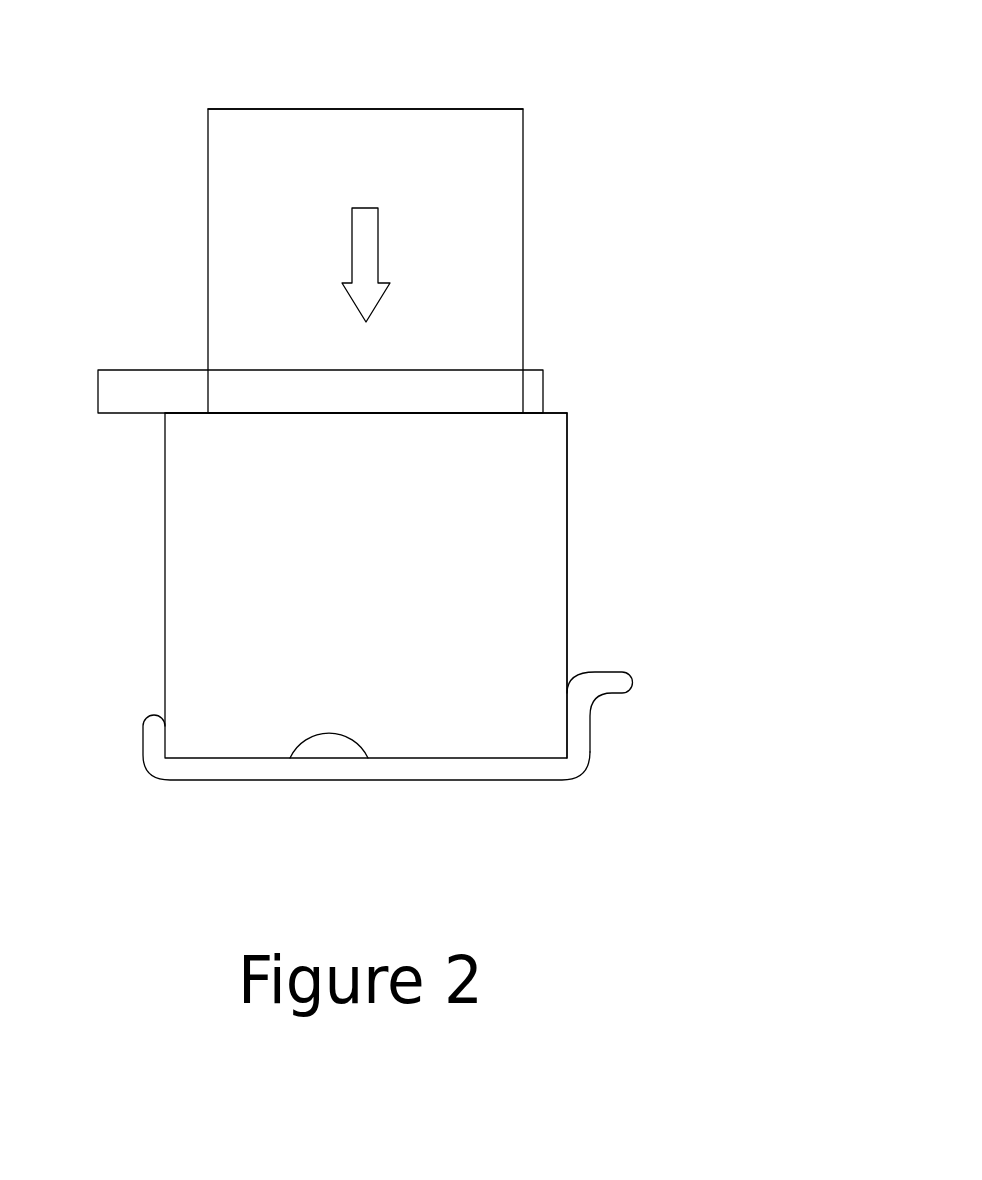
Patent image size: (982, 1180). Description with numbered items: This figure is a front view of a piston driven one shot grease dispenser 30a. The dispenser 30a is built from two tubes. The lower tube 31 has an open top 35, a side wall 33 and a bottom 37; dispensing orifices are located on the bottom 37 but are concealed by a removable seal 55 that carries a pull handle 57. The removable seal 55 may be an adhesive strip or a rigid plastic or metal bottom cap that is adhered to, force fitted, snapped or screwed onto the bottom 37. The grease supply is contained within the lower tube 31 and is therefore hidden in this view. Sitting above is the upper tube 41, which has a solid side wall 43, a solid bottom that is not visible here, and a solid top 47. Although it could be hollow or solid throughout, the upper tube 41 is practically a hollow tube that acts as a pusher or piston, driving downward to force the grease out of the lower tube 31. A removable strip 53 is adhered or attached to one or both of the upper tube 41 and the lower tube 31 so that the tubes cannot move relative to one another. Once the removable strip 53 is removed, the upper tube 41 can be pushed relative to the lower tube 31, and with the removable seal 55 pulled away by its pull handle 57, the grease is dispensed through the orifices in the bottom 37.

The piston driven one shot grease dispenser 30a is at (648, 293).
The lower tube 31 is at (513, 567).
The side wall 33 is at (227, 530).
The open top 35 is at (435, 413).
The bottom 37 is at (299, 744).
The upper tube 41 is at (458, 271).
The solid side wall 43 is at (255, 187).
The solid top 47 is at (365, 108).
The removable strip 53 is at (125, 393).
The removable seal 55 is at (443, 768).
The pull handle 57 is at (612, 670).